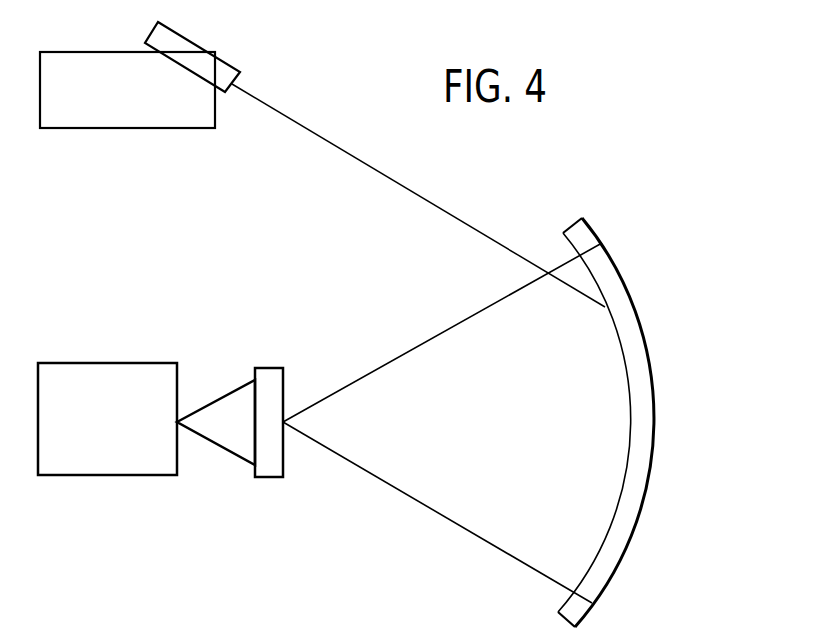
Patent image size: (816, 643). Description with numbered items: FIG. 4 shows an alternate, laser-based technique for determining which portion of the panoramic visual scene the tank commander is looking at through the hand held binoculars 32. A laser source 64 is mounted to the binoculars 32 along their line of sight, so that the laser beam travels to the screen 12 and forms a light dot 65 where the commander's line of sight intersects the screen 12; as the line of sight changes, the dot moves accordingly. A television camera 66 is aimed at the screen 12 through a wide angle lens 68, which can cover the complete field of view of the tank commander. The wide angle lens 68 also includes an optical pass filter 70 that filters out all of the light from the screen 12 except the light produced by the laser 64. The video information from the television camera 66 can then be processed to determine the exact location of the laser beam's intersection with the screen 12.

The screen 12 is at (658, 415).
The hand held binoculars 32 is at (148, 130).
The laser source 64 is at (213, 53).
The light dot 65 is at (604, 310).
The television camera 66 is at (95, 477).
The wide angle lens 68 is at (220, 452).
The optical pass filter 70 is at (272, 373).